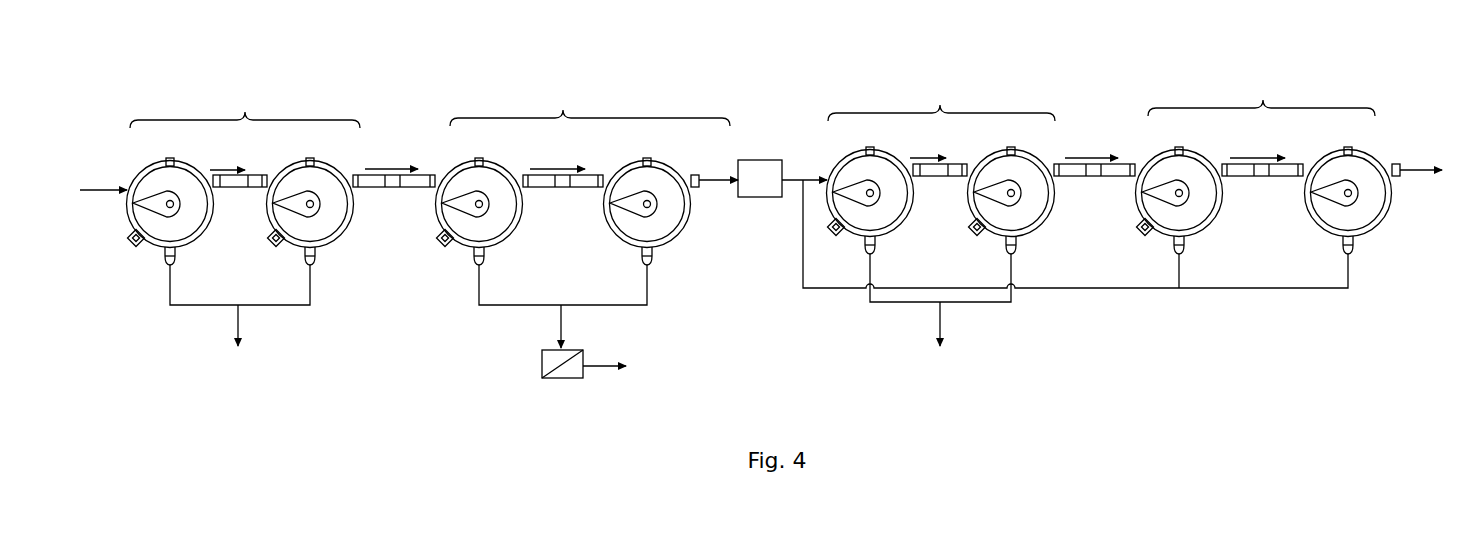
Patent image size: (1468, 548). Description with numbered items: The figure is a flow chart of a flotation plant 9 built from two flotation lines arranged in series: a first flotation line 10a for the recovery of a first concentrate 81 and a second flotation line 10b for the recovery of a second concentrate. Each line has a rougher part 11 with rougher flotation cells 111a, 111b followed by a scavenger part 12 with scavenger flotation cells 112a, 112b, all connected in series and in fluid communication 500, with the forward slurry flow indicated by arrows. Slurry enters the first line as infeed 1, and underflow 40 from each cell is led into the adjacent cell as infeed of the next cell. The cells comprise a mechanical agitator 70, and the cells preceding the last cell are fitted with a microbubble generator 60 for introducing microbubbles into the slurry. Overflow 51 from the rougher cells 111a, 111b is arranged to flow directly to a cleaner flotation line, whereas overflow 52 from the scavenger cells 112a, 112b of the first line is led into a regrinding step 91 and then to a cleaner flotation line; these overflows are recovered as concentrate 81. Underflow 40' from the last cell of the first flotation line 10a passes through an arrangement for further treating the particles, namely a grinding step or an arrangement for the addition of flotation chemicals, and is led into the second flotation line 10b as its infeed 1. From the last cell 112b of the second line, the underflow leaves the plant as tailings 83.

The flotation plant 9 is at (758, 52).
The first flotation line 10a is at (414, 111).
The second flotation line 10b is at (1104, 106).
The rougher part 11 is at (592, 197).
The scavenger part 12 is at (905, 232).
The infeed 1 is at (131, 188).
The rougher flotation cell 111a is at (185, 180).
The rougher flotation cell 111b is at (325, 180).
The scavenger flotation cell 112a is at (494, 178).
The scavenger flotation cell 112b is at (662, 178).
The mechanical agitator 70 is at (168, 199).
The underflow 40 is at (758, 191).
The fluid communication 500 is at (262, 175).
The underflow 40' is at (1056, 160).
The tailings 83 is at (1424, 166).
The microbubble generator 60 is at (131, 243).
The overflow 51 is at (177, 258).
The overflow 52 is at (485, 259).
The concentrate 81 is at (175, 274).
The regrinding step 91 is at (588, 353).